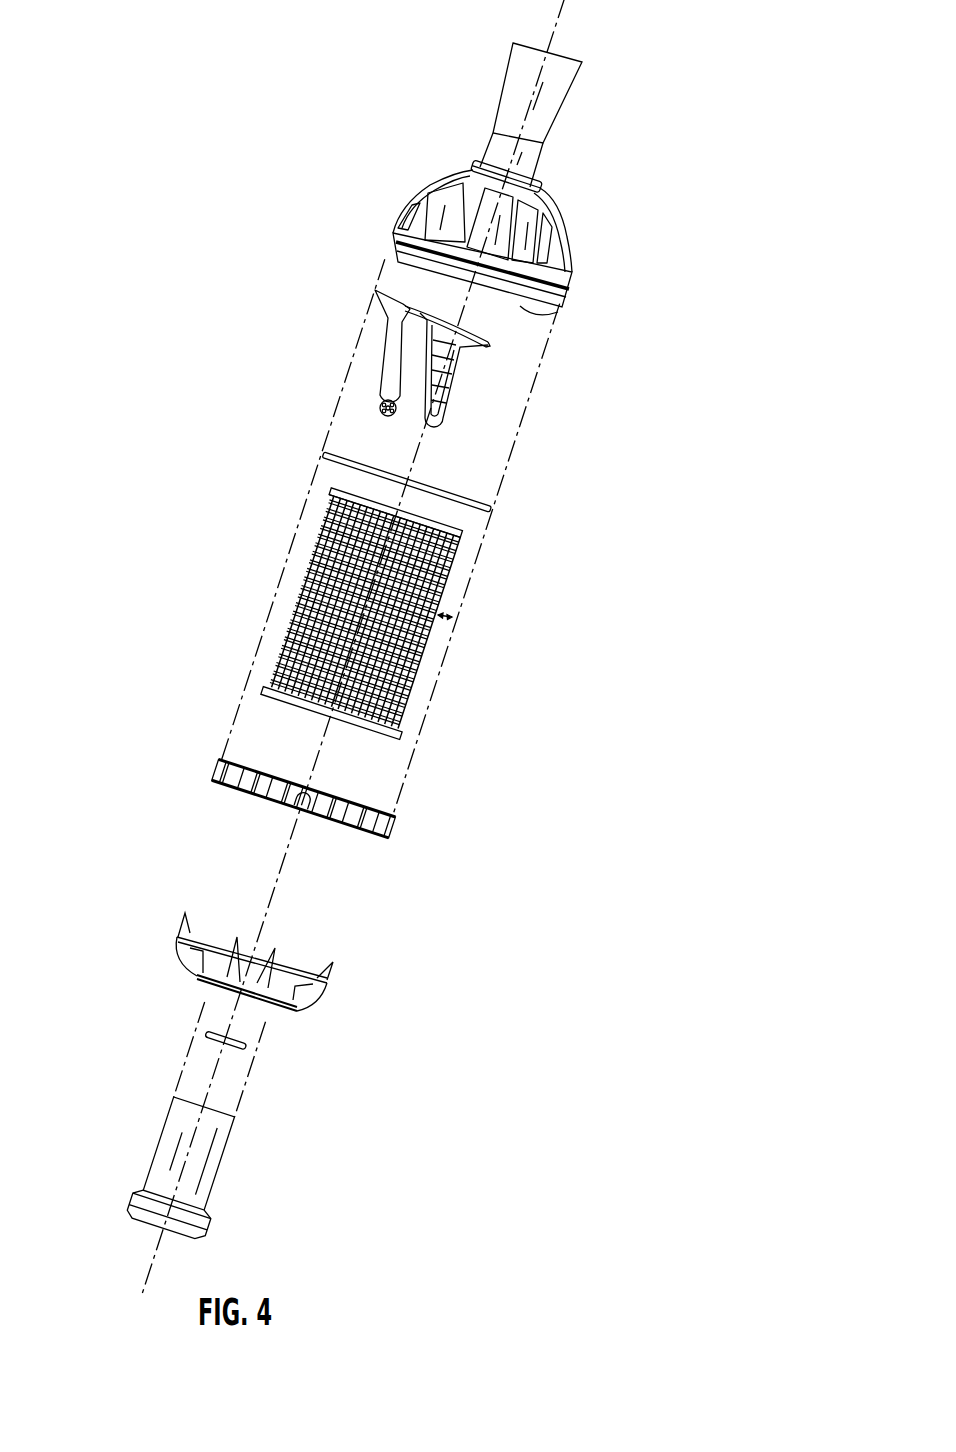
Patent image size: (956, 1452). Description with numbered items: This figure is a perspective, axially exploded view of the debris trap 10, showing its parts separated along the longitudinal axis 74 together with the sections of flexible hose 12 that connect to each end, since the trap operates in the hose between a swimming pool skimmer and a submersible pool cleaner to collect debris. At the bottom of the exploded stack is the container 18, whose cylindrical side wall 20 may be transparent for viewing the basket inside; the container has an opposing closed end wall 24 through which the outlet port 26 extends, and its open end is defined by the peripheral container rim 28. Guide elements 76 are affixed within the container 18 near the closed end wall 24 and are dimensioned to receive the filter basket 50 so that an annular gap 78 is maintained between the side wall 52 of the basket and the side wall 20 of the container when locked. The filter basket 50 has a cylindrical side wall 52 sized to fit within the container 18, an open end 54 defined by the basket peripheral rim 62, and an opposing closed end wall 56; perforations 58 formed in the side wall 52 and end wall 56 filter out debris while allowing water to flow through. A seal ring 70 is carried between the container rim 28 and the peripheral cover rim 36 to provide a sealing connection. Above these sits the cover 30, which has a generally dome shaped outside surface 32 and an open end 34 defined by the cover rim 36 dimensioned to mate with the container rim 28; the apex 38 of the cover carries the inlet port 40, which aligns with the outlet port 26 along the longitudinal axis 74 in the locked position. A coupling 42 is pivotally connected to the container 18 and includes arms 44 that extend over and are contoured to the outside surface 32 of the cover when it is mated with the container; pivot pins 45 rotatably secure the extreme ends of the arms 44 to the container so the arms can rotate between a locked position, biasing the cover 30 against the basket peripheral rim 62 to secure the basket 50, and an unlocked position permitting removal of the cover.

The debris trap 10 is at (371, 647).
The flexible hose 12 is at (543, 107).
The container 18 is at (257, 917).
The cylindrical side wall 20 is at (257, 917).
The closed end wall 24 is at (202, 986).
The outlet port 26 is at (243, 1022).
The peripheral container rim 28 is at (380, 810).
The cover 30 is at (483, 258).
The dome shaped outside surface 32 is at (462, 197).
The open end 34 is at (527, 305).
The peripheral cover rim 36 is at (392, 247).
The apex 38 is at (540, 190).
The inlet port 40 is at (513, 170).
The coupling 42 is at (422, 369).
The arms 44 is at (377, 369).
The pivot pins 45 is at (380, 416).
The filter basket 50 is at (371, 616).
The cylindrical side wall 52 is at (420, 660).
The open end 54 is at (445, 525).
The closed end wall 56 is at (373, 733).
The perforations 58 is at (322, 638).
The basket peripheral rim 62 is at (455, 532).
The seal ring 70 is at (327, 462).
The longitudinal axis 74 is at (561, 6).
The guide elements 76 is at (175, 945).
The annular gap 78 is at (443, 627).